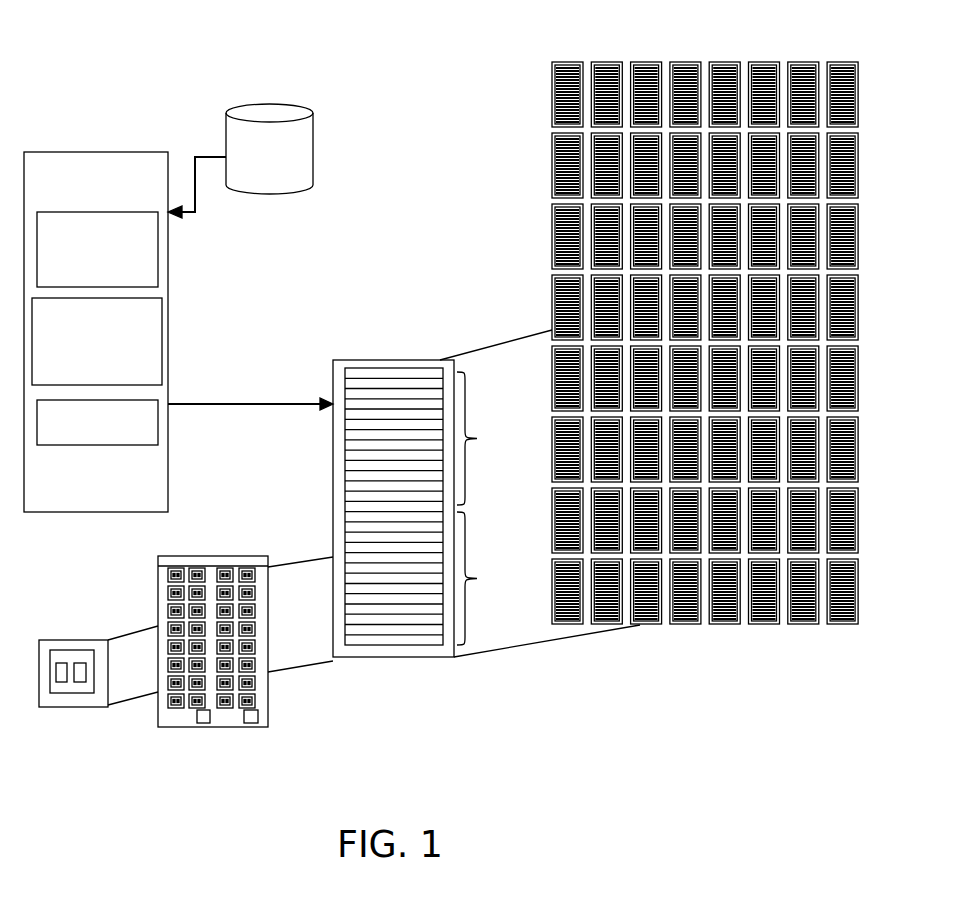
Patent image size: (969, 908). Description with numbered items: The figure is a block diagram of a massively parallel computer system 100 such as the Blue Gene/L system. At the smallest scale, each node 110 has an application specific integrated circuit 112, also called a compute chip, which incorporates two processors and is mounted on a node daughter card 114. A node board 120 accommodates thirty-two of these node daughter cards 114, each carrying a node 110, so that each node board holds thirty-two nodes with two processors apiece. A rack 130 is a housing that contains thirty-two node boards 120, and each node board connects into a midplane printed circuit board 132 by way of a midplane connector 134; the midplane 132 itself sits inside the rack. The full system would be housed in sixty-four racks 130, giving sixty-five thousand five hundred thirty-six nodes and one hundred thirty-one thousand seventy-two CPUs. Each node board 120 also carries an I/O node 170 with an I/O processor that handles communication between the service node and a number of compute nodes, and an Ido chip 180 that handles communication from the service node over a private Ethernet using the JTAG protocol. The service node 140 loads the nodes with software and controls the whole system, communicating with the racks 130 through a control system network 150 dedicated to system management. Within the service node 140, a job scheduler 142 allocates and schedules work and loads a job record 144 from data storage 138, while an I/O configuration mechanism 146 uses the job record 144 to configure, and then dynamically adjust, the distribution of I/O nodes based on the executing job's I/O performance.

The massively parallel computer system 100 is at (146, 80).
The node 110 is at (53, 638).
The application specific integrated circuit (compute chip) 112 is at (50, 697).
The node daughter card 114 is at (82, 708).
The node board 120 is at (268, 611).
The rack 130 is at (370, 360).
The midplane printed circuit board 132 is at (502, 508).
The midplane connector 134 is at (158, 562).
The data storage 138 is at (313, 128).
The service node 140 is at (96, 332).
The job scheduler 142 is at (97, 249).
The job record 144 is at (160, 400).
The I/O configuration mechanism 146 is at (162, 352).
The control system network 150 is at (210, 405).
The I/O node 170 is at (205, 725).
The Ido chip 180 is at (253, 727).